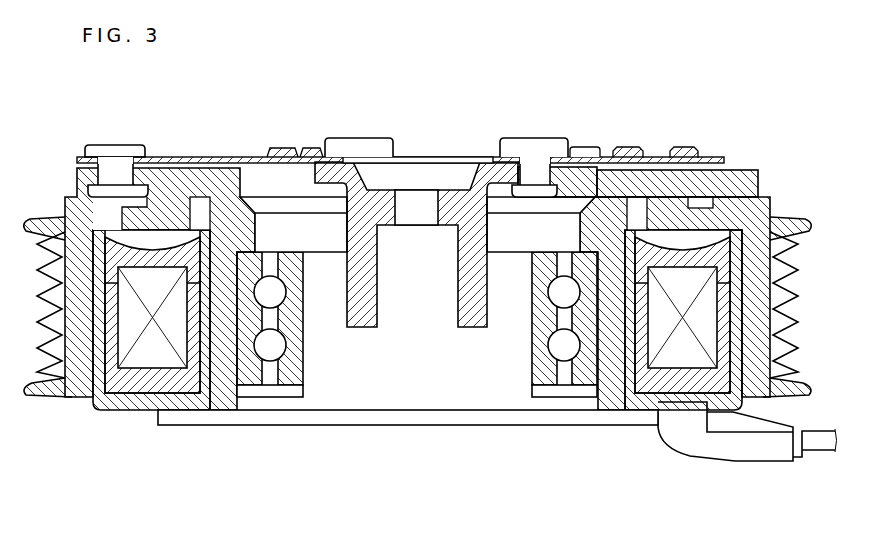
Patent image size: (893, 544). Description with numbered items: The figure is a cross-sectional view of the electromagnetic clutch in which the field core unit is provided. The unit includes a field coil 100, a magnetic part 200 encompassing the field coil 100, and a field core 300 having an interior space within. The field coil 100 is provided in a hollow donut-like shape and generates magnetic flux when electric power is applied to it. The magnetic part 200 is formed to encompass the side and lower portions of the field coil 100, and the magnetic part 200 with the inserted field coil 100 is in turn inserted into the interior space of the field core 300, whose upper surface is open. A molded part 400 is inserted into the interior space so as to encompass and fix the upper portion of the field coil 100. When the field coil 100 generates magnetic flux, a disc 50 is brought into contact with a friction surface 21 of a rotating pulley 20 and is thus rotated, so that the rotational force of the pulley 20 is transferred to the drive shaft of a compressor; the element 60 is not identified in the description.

The pulley 20 is at (767, 248).
The friction surface 21 is at (660, 160).
The disc 50 is at (733, 170).
The rotor shaft hub 60 is at (366, 318).
The field coil 100 is at (143, 357).
The magnetic part 200 is at (97, 400).
The field core 300 is at (188, 404).
The molded part 400 is at (158, 252).